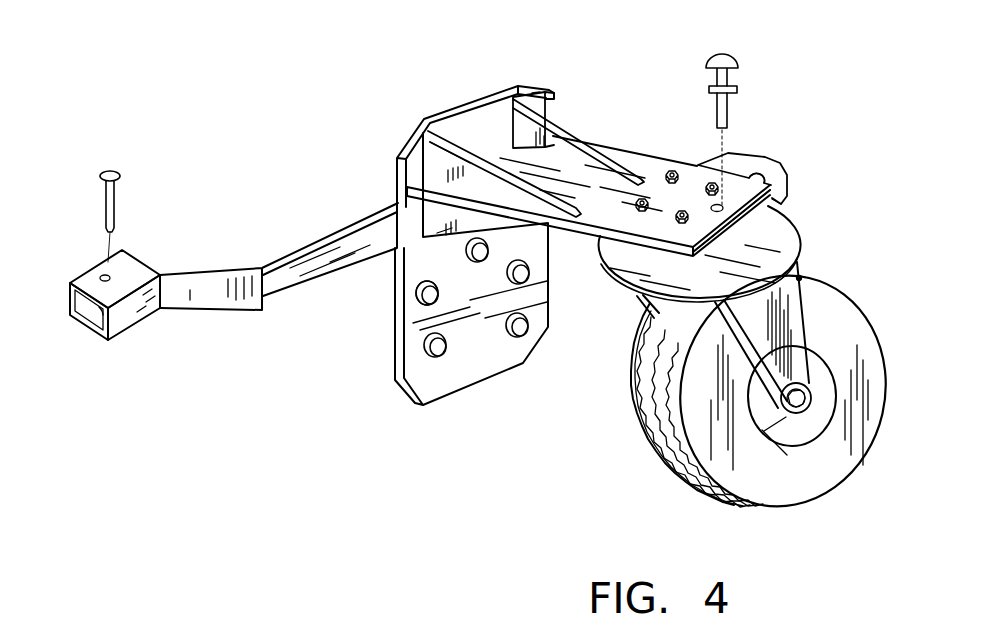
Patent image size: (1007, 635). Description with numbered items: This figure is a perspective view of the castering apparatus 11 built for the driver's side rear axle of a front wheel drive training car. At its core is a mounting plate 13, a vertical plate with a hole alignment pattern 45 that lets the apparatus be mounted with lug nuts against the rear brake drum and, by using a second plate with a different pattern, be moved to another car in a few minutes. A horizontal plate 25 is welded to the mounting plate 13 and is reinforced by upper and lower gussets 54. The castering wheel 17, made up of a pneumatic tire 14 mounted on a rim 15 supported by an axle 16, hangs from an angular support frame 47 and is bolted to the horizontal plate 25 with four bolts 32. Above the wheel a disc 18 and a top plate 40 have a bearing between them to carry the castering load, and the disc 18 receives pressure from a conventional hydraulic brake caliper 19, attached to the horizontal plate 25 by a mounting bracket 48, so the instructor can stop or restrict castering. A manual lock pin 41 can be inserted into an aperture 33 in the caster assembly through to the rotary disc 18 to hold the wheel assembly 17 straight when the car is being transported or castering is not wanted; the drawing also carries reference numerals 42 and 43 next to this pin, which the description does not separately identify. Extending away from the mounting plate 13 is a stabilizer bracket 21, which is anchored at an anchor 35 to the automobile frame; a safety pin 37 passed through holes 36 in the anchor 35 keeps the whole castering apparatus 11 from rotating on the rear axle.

The castering apparatus 11 is at (403, 140).
The mounting plate 13 is at (488, 358).
The pneumatic tire 14 is at (867, 333).
The rim 15 is at (793, 433).
The axle 16 is at (813, 372).
The castering wheel 17 is at (793, 322).
The disc 18 is at (782, 228).
The brake caliper 19 is at (757, 157).
The stabilizer bracket 21 is at (203, 267).
The horizontal plate 25 is at (595, 213).
The bolts 32 is at (668, 167).
The aperture 33 is at (777, 180).
The anchor 35 is at (143, 258).
The holes 36 is at (112, 283).
The safety pin 37 is at (118, 207).
The top plate 40 is at (715, 242).
The manual lock pin 41 is at (730, 121).
The washer 42 is at (707, 89).
The pin head 43 is at (727, 53).
The hole alignment pattern 45 is at (415, 305).
The angular support frame 47 is at (801, 277).
The mounting bracket 48 is at (713, 166).
The gussets 54 is at (537, 93).